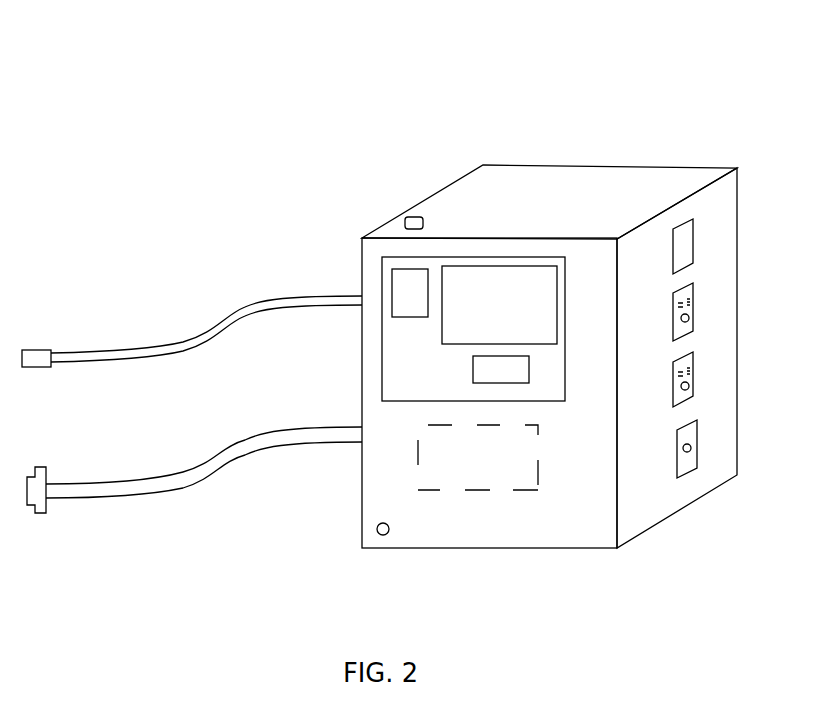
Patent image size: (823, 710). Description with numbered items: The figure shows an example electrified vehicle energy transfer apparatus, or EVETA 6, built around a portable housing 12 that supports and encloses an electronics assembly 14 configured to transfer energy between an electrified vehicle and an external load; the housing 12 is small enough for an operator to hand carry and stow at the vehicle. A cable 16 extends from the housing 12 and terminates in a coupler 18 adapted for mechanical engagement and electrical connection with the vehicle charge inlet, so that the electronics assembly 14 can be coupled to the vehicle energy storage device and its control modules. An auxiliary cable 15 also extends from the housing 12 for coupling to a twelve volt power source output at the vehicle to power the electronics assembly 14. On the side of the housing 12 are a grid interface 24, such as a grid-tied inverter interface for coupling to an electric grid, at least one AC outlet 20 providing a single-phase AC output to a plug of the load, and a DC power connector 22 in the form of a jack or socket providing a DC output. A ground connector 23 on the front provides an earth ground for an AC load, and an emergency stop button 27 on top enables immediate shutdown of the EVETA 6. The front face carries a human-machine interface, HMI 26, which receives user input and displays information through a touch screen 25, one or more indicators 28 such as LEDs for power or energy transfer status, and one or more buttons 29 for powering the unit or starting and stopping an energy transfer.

The electrified vehicle energy transfer apparatus (EVETA) 6 is at (250, 94).
The portable housing 12 is at (447, 189).
The electronics assembly 14 is at (528, 449).
The auxiliary cable 15 is at (132, 332).
The cable 16 is at (226, 447).
The coupler 18 is at (46, 467).
The AC outlet 20 is at (690, 331).
The DC power connector 22 is at (688, 463).
The ground connector 23 is at (377, 537).
The grid interface 24 is at (685, 262).
The touch screen 25 is at (514, 308).
The human-machine interface (HMI) 26 is at (421, 348).
The emergency stop button 27 is at (405, 222).
The indicator 28 is at (513, 380).
The button 29 is at (422, 301).